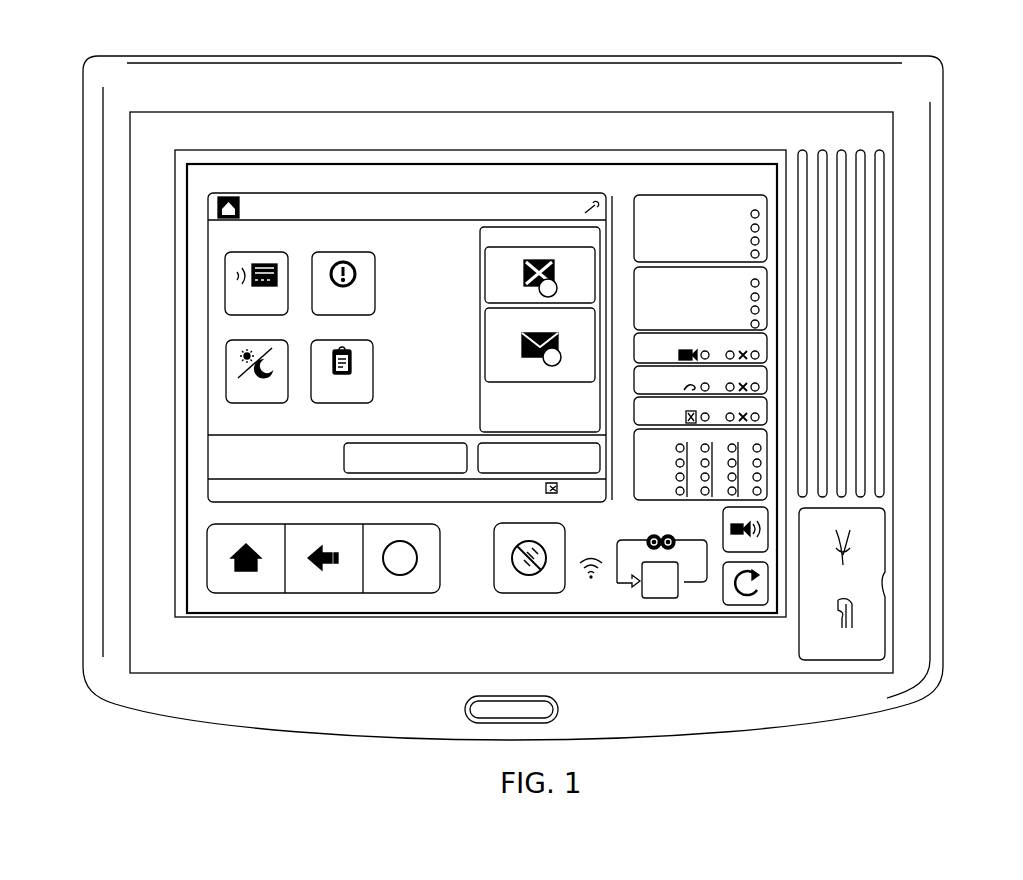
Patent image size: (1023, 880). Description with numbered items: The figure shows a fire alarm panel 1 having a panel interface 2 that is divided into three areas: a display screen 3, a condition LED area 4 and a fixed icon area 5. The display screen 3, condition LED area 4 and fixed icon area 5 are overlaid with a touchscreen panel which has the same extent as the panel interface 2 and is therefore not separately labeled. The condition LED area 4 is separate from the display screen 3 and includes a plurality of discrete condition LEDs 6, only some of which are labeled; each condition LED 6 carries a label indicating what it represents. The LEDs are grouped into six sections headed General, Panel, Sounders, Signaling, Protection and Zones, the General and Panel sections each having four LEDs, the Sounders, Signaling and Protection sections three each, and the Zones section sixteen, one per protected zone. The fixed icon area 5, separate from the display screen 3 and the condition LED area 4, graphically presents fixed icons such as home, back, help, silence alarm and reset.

The fire alarm panel 1 is at (970, 366).
The panel interface 2 is at (203, 175).
The display screen 3 is at (220, 423).
The condition LED area 4 is at (727, 208).
The fixed icon area 5 is at (462, 592).
The condition LED 6 is at (760, 254).